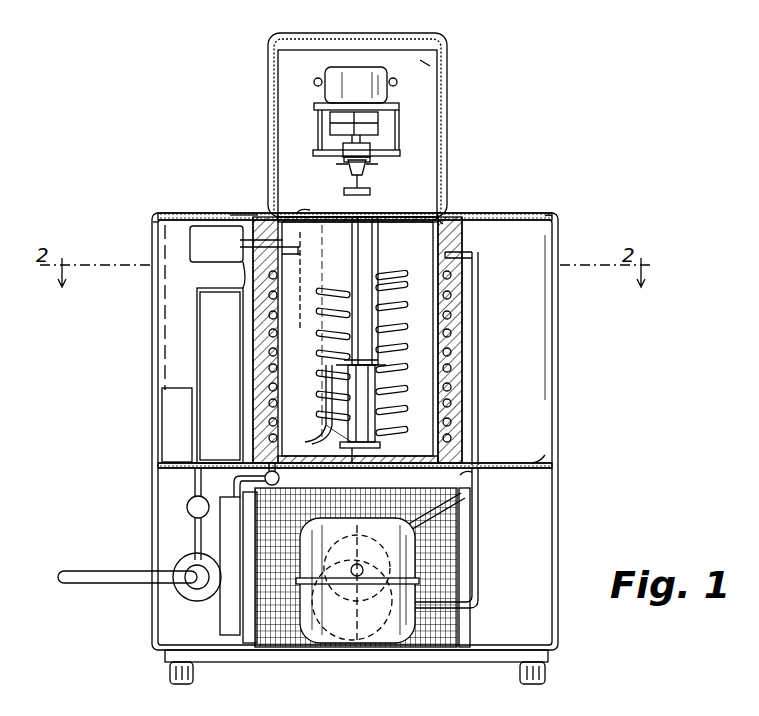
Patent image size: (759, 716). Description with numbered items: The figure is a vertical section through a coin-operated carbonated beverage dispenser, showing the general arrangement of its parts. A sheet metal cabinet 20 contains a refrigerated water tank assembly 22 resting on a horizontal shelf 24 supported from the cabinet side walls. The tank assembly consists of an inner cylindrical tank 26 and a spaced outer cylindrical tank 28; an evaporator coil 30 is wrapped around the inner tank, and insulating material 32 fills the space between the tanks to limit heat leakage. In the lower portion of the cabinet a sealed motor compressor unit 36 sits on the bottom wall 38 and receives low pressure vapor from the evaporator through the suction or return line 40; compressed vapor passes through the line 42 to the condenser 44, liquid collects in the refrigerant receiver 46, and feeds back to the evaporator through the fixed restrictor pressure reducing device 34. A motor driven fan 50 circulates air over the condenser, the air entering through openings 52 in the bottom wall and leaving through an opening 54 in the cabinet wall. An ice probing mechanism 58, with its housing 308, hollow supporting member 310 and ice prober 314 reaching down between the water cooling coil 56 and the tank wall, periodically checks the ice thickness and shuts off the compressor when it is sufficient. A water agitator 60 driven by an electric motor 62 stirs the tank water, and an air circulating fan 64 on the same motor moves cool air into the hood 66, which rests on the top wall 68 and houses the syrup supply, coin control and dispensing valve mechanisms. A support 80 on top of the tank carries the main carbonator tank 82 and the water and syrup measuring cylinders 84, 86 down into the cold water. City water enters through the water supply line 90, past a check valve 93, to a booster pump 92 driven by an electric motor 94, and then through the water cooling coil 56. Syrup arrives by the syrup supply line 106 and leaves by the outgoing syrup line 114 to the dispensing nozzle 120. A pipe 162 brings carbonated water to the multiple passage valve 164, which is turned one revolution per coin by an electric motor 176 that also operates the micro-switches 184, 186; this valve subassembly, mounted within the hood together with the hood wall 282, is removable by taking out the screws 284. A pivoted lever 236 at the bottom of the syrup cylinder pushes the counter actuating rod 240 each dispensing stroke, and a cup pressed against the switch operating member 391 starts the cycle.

The sheet metal cabinet 20 is at (558, 270).
The refrigerated water tank assembly 22 is at (450, 330).
The shelf 24 is at (545, 455).
The inner cylindrical tank 26 is at (465, 240).
The outer cylindrical tank 28 is at (462, 250).
The evaporator coil 30 is at (450, 298).
The insulating material 32 is at (455, 418).
The pressure reducing device 34 is at (280, 478).
The sealed motor compressor unit 36 is at (372, 643).
The bottom wall 38 is at (440, 662).
The suction or return line 40 is at (470, 548).
The line 42 is at (440, 522).
The condenser 44 is at (470, 510).
The refrigerant receiver 46 is at (230, 620).
The motor driven fan 50 is at (348, 562).
The openings 52 is at (215, 662).
The opening 54 is at (463, 490).
The water cooling coil 56 is at (450, 355).
The ice probing mechanism 58 is at (126, 207).
The water agitator 60 is at (478, 272).
The electric motor 62 is at (443, 220).
The air circulating fan 64 is at (410, 196).
The hood 66 is at (268, 60).
The top wall 68 is at (540, 213).
The support 80 is at (258, 215).
The main carbonator tank 82 is at (322, 320).
The water measuring cylinder 84 is at (340, 356).
The syrup measuring cylinder 86 is at (305, 435).
The water supply line 90 is at (72, 568).
The booster pump 92 is at (195, 588).
The check valve 93 is at (187, 507).
The electric motor 94 is at (180, 560).
The syrup supply line 106 is at (380, 350).
The outgoing syrup line 114 is at (330, 372).
The dispensing nozzle 120 is at (347, 196).
The pipe 162 is at (343, 150).
The multiple passage valve 164 is at (352, 168).
The electric motor 176 is at (356, 72).
The micro-switch 184 is at (378, 118).
The micro-switch 186 is at (378, 130).
The pivoted lever 236 is at (357, 463).
The counter actuating rod 240 is at (245, 285).
The housing wall 282 is at (430, 66).
The screws 284 is at (314, 82).
The main support or housing 308 is at (190, 240).
The hollow supporting member 310 is at (240, 262).
The ice prober 314 is at (282, 304).
The switch operating member 391 is at (297, 213).